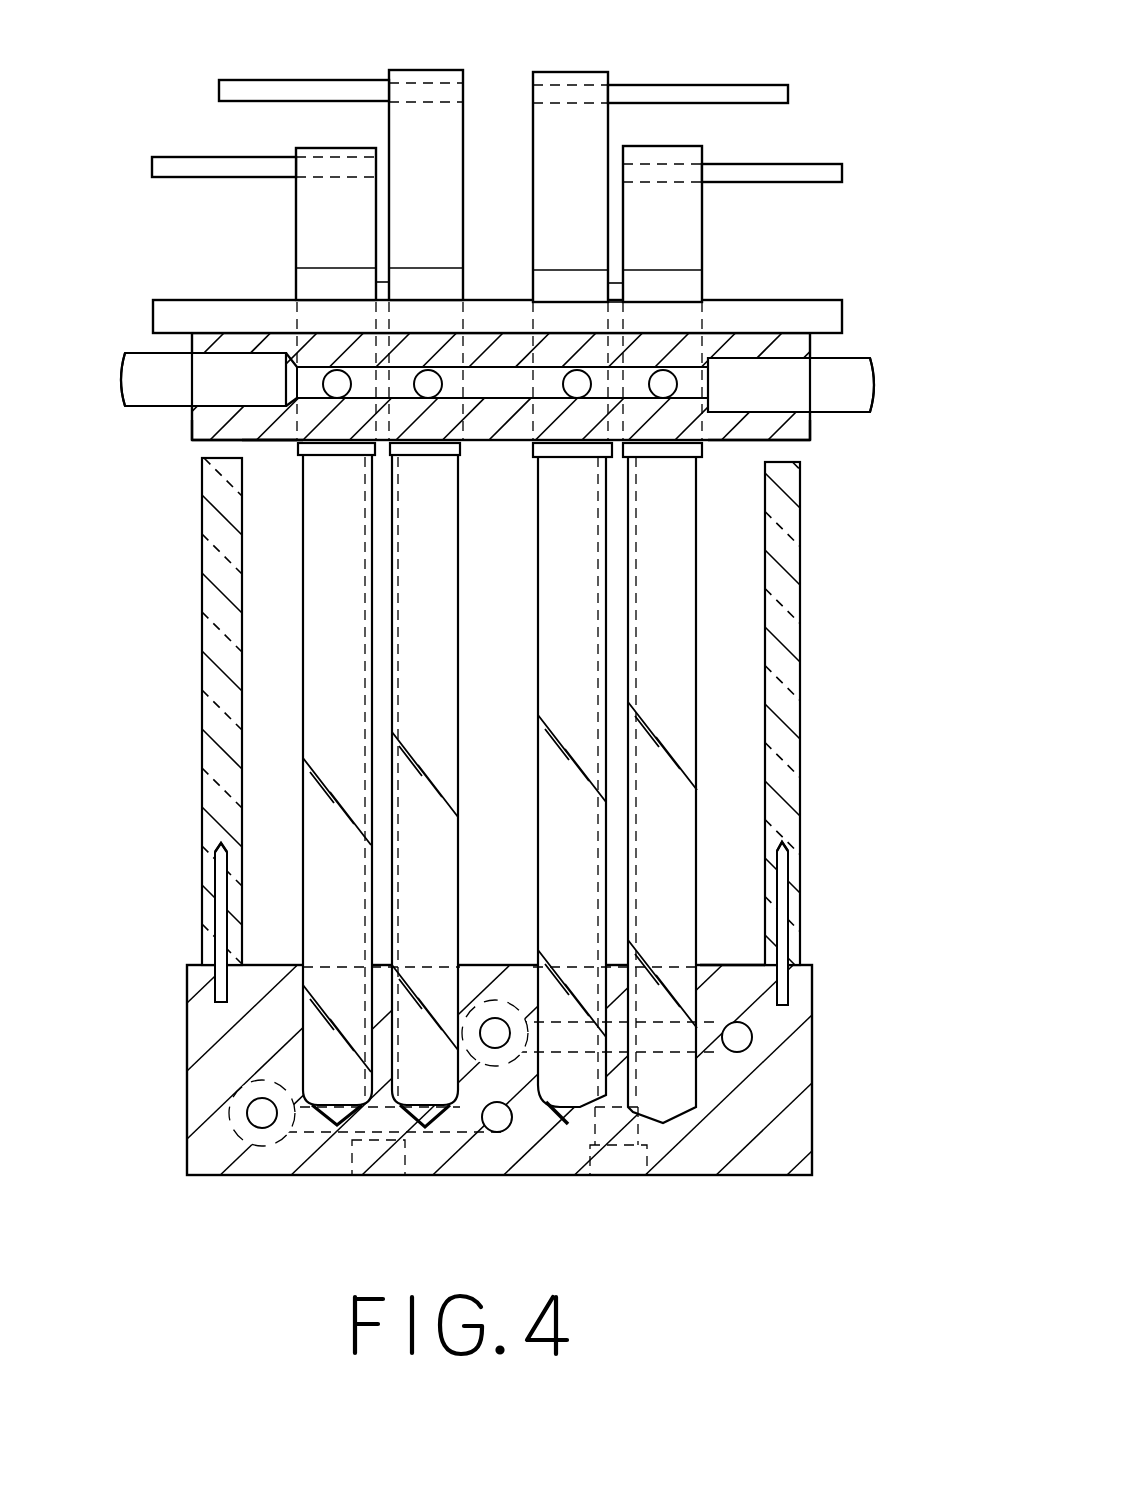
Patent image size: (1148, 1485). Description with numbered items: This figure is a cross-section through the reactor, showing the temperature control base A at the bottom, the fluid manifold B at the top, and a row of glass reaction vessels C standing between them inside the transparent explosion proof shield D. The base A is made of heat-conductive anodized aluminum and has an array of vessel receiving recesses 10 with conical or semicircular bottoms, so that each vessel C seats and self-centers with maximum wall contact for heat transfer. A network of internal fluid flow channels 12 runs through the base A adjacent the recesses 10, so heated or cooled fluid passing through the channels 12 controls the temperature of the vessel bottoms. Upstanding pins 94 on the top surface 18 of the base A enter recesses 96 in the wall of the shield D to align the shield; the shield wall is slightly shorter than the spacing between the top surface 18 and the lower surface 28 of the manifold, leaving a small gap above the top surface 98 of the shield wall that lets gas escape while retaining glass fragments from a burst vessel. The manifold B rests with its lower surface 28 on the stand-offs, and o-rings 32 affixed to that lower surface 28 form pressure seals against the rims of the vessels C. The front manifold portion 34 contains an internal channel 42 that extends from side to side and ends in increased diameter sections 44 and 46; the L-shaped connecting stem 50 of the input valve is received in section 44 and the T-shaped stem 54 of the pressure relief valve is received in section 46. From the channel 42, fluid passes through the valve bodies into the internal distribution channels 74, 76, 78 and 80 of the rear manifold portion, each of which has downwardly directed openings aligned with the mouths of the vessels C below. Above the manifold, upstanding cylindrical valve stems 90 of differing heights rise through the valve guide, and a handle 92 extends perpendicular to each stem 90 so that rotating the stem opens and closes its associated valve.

The vessel receiving recess 10 is at (492, 1090).
The internal fluid flow channel 12 is at (495, 1030).
The top surface of base 18 is at (727, 963).
The lower surface of manifold 28 is at (262, 452).
The o-ring 32 is at (337, 458).
The front manifold portion 34 is at (790, 430).
The internal channel 42 is at (500, 397).
The increased diameter channel section 44 is at (760, 357).
The increased diameter channel section 46 is at (250, 352).
The connecting stem 50 is at (852, 382).
The stem 54 is at (160, 382).
The internal distribution channel 74 is at (663, 385).
The internal distribution channel 76 is at (577, 385).
The internal distribution channel 78 is at (428, 385).
The internal distribution channel 80 is at (337, 385).
The valve stem 90 is at (450, 70).
The handle 92 is at (217, 83).
The pin 94 is at (222, 918).
The recess 96 is at (220, 848).
The top surface of shield wall 98 is at (198, 445).
The temperature control base A is at (812, 1050).
The fluid manifold B is at (790, 301).
The glass reaction vessel C is at (352, 640).
The explosion proof shield D is at (203, 730).